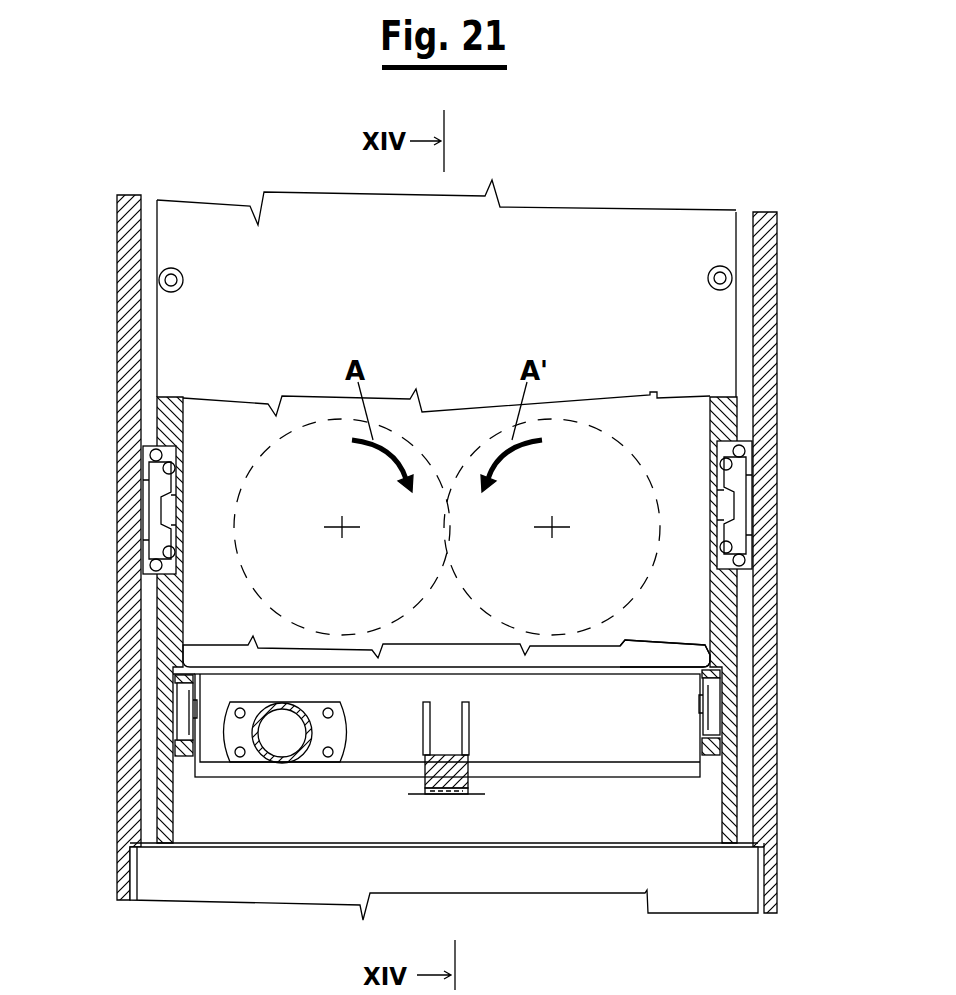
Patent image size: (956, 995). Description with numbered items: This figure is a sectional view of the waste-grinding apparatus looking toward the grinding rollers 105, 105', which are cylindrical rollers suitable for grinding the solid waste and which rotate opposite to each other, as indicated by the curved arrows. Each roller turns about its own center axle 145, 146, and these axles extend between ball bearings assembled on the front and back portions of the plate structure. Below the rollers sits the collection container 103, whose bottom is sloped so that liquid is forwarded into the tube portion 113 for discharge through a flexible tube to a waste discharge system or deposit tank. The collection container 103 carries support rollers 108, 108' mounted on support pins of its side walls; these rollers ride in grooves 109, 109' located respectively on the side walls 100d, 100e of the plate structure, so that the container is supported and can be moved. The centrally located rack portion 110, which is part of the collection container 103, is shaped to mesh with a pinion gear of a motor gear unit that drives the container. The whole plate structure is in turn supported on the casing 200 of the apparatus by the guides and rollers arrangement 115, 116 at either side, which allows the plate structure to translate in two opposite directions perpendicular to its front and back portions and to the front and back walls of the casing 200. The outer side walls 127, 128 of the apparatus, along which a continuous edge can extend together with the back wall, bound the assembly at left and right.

The grinding roller 105 is at (330, 495).
The grinding roller 105' is at (552, 495).
The center axle 145 is at (338, 530).
The center axle 146 is at (558, 531).
The guides and rollers arrangement 115 is at (147, 475).
The guides and rollers arrangement 116 is at (746, 468).
The side wall 128 is at (203, 652).
The side wall 127 is at (701, 646).
The support roller 108' is at (121, 694).
The support roller 108 is at (774, 689).
The groove 109' is at (119, 729).
The groove 109 is at (774, 724).
The side wall 100e is at (167, 778).
The side wall 100d is at (722, 780).
The tube portion 113 is at (283, 761).
The rack portion 110 is at (455, 794).
The collection container 103 is at (515, 747).
The casing 200 is at (124, 858).